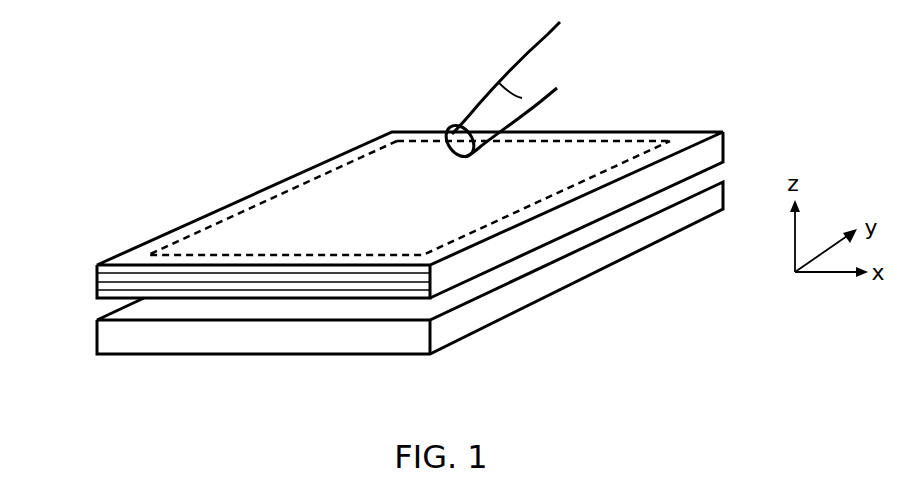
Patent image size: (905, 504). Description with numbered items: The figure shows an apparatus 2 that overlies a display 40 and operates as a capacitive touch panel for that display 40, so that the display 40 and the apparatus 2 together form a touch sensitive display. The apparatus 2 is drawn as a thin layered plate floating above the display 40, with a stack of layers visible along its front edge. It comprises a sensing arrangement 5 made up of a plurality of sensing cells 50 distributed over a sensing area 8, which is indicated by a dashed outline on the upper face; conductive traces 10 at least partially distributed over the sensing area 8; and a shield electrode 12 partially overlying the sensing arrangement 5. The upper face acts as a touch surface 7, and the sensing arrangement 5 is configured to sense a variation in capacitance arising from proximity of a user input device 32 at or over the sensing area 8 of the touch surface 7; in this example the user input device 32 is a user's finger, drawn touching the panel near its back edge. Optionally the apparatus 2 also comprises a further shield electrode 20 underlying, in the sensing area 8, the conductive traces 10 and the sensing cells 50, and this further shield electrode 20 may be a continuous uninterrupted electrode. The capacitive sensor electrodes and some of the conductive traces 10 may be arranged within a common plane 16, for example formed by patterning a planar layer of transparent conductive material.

The apparatus 2 is at (111, 151).
The sensing arrangement 5 is at (727, 138).
The touch surface 7 is at (614, 139).
The sensing area 8 is at (270, 220).
The conductive traces 10 is at (265, 299).
The sensing cells 50 is at (96, 287).
The shield electrode 12 is at (95, 264).
The common plane 16 is at (423, 283).
The further shield electrode 20 is at (96, 298).
The user input device 32 is at (566, 82).
The display 40 is at (724, 197).